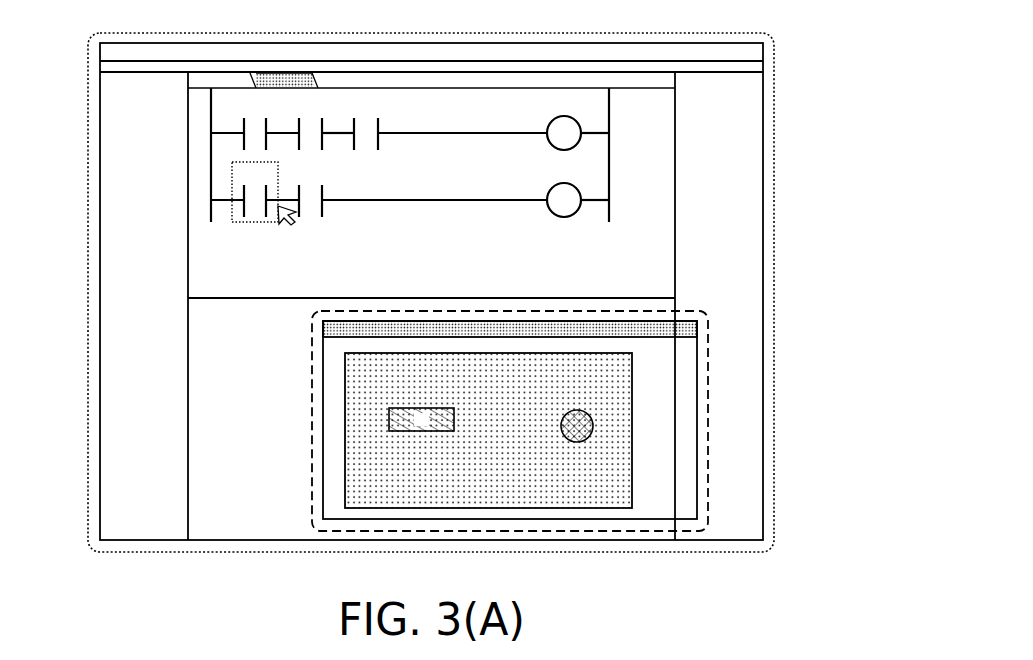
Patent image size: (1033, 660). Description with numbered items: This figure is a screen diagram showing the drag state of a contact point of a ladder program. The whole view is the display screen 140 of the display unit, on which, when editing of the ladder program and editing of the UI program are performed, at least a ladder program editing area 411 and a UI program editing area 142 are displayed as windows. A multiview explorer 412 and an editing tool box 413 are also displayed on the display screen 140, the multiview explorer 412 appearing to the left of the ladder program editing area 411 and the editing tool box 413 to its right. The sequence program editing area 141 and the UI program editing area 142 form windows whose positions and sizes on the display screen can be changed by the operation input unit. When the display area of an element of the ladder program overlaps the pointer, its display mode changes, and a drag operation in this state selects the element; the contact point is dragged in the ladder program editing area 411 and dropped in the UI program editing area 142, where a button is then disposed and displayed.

The display screen 140 is at (742, 45).
The sequence program editing area 141 is at (773, 88).
The UI program editing area 142 is at (645, 533).
The ladder program editing area 411 is at (641, 94).
The multiview explorer 412 is at (110, 110).
The editing tool box 413 is at (758, 167).